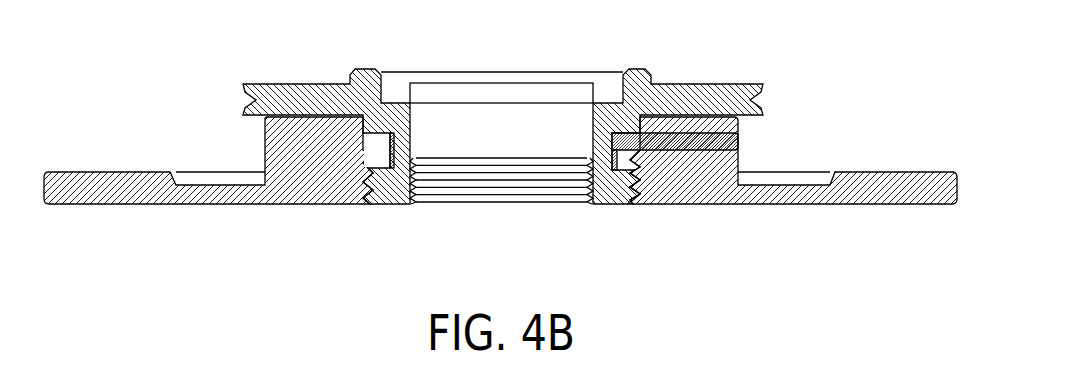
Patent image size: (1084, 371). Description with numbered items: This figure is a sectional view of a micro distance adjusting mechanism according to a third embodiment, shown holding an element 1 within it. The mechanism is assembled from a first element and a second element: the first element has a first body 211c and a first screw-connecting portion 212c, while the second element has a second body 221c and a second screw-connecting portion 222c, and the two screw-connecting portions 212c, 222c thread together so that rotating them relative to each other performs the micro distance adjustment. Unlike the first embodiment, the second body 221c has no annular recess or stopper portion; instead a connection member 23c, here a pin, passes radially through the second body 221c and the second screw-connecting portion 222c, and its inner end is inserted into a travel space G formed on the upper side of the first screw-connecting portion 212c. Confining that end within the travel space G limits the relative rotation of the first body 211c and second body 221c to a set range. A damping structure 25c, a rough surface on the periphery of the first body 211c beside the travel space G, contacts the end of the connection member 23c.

The lens 1 is at (499, 112).
The first body 211c is at (254, 100).
The first screw-connecting portion 212c is at (629, 201).
The second body 221c is at (873, 182).
The second screw-connecting portion 222c is at (637, 201).
The connection member 23c is at (738, 138).
The damping structure 25c is at (393, 147).
The travel space G is at (374, 140).